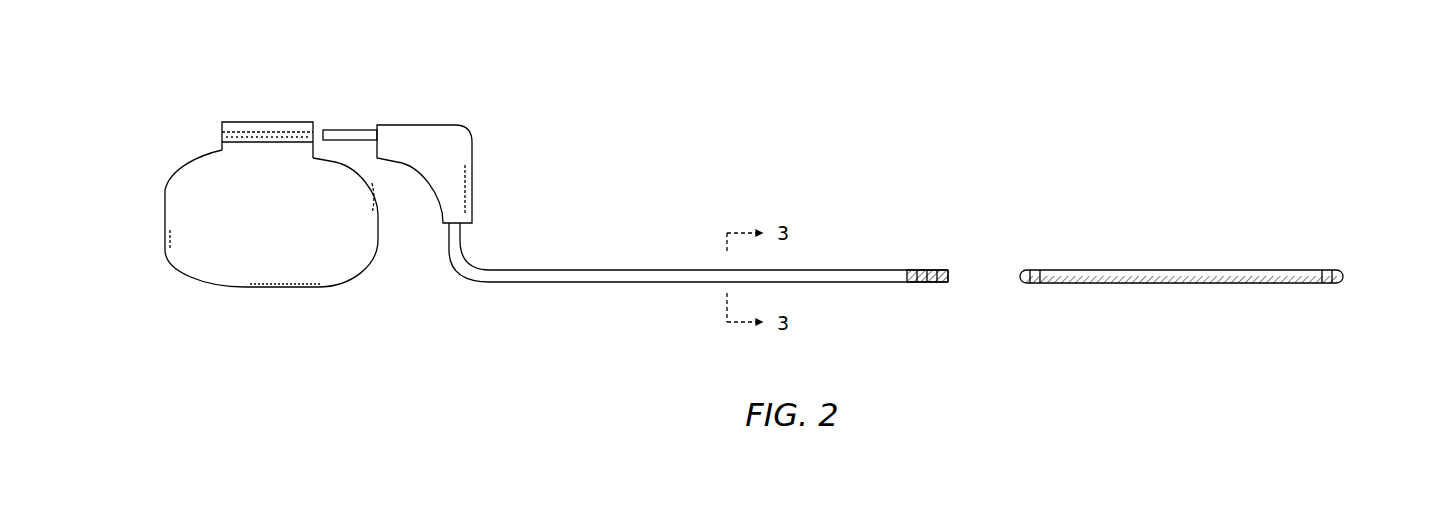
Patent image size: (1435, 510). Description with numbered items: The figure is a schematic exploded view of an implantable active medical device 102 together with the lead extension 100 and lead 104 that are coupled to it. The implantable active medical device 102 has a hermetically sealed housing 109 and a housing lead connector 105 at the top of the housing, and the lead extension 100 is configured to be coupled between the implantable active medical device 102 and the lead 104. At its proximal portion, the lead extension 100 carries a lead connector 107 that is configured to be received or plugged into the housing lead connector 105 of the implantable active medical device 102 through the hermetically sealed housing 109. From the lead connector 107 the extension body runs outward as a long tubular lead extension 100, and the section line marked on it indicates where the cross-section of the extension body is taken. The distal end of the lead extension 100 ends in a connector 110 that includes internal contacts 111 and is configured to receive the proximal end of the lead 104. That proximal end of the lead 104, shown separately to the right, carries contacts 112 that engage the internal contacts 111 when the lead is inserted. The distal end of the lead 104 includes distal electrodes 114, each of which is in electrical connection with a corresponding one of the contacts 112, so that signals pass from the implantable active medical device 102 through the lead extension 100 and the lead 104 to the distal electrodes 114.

The lead extension 100 is at (612, 270).
The implantable active medical device 102 is at (322, 303).
The lead 104 is at (1220, 268).
The housing lead connector 105 is at (292, 132).
The lead connector 107 is at (455, 137).
The hermetically sealed housing 109 is at (232, 120).
The connector 110 is at (920, 270).
The internal contacts 111 is at (940, 268).
The contacts 112 is at (1035, 270).
The distal electrodes 114 is at (1310, 268).